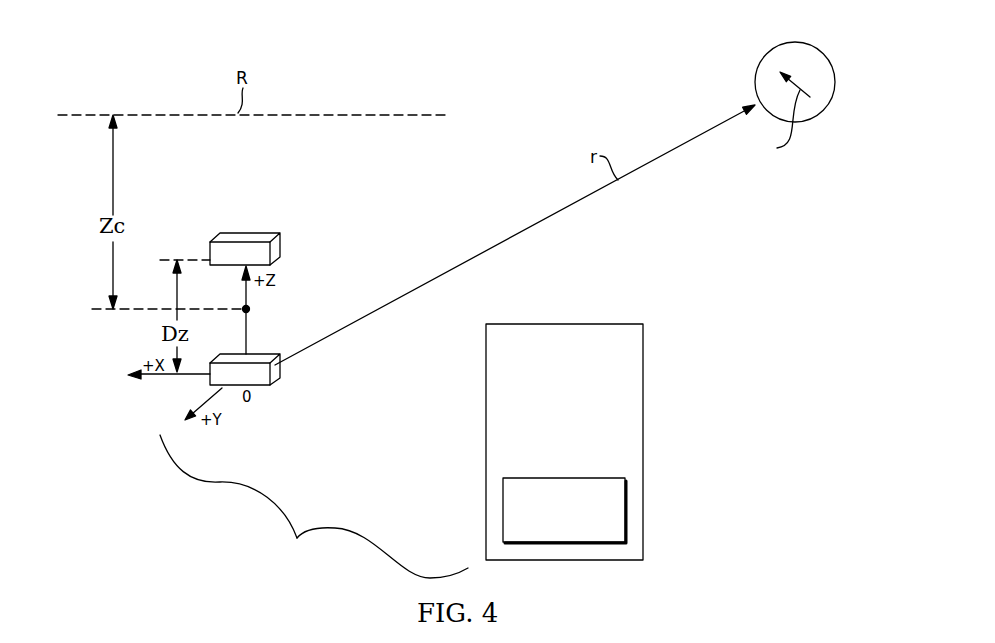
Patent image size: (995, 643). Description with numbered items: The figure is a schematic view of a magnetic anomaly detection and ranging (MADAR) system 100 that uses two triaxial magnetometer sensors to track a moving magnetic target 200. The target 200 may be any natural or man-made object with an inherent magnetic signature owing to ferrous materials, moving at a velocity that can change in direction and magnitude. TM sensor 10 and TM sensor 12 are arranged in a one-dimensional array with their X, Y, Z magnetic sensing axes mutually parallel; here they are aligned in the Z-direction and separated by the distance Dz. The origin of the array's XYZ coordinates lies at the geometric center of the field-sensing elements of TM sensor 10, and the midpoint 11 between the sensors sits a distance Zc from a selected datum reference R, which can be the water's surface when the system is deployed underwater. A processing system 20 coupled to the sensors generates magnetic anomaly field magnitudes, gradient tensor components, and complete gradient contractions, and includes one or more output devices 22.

The TM sensor 10 is at (257, 353).
The midpoint 11 is at (250, 308).
The TM sensor 12 is at (246, 233).
The processing system 20 is at (643, 347).
The output device(s) 22 is at (626, 504).
The magnetic anomaly detection and ranging (MADAR) system 100 is at (297, 538).
The magnetic target 200 is at (830, 60).